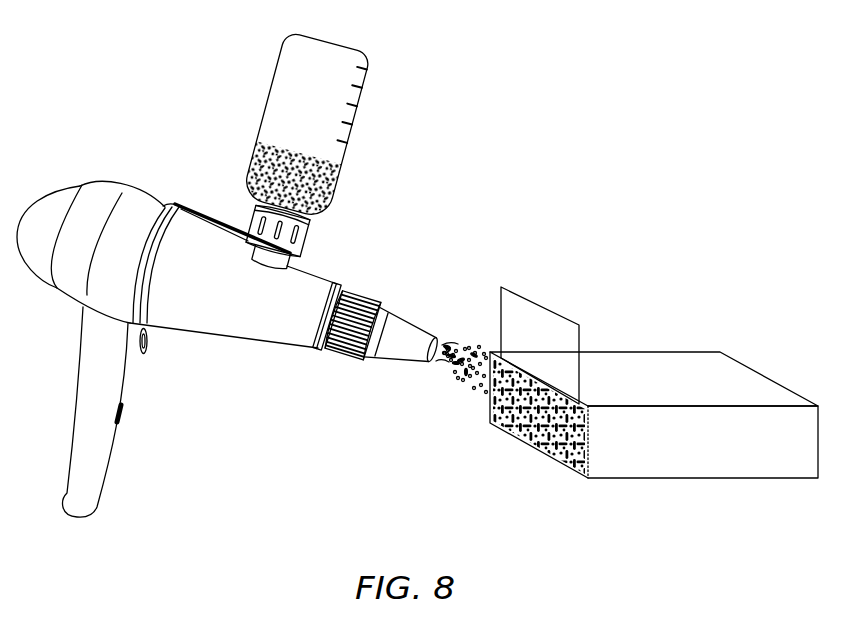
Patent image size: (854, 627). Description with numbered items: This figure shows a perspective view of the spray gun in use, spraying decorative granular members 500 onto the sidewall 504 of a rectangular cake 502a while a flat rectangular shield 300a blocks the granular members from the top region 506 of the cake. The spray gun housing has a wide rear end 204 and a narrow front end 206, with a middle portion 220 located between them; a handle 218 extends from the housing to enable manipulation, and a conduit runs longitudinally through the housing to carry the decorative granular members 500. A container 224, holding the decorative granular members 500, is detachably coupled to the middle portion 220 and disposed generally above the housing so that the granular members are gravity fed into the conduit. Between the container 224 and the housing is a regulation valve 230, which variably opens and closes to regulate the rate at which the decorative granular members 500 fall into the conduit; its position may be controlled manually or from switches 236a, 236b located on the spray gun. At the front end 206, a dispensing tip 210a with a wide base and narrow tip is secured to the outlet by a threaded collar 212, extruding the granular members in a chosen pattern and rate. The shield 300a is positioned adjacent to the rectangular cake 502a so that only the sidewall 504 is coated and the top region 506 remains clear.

The rear end 204 is at (75, 186).
The front end 206 is at (265, 343).
The dispensing tip 210a is at (393, 363).
The collar 212 is at (343, 358).
The handle 218 is at (77, 377).
The middle portion 220 is at (207, 224).
The container 224 is at (378, 108).
The regulation valve 230 is at (310, 238).
The switch 236a is at (122, 415).
The switch 236b is at (145, 353).
The shield 300a is at (535, 305).
The decorative granular members 500 is at (340, 171).
The rectangular cake 502a is at (654, 379).
The sidewall 504 is at (714, 460).
The top region 506 is at (682, 388).